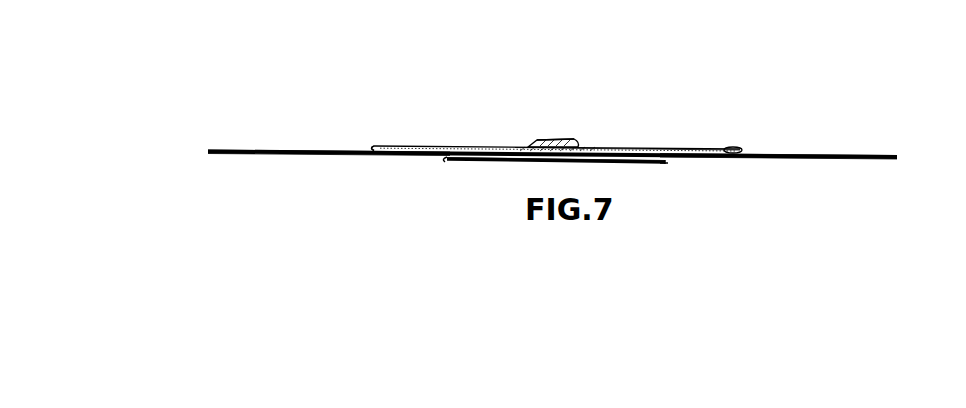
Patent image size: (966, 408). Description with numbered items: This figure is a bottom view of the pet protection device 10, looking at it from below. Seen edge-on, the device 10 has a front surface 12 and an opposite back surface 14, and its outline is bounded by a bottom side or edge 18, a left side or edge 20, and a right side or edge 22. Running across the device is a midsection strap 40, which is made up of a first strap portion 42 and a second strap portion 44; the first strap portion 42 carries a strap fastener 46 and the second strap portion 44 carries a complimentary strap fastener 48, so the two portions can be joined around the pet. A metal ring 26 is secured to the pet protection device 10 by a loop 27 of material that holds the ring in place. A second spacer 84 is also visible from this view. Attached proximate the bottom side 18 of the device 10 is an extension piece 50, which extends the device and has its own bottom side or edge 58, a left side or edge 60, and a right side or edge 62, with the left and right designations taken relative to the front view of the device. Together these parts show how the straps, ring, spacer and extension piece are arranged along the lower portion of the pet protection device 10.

The pet protection device 10 is at (226, 63).
The front surface 12 is at (442, 128).
The back surface 14 is at (430, 170).
The bottom side or edge 18 is at (616, 148).
The left side or edge 20 is at (368, 146).
The right side or edge 22 is at (747, 144).
The metal ring 26 is at (534, 140).
The loop 27 is at (554, 144).
The midsection strap 40 is at (271, 171).
The first strap portion 42 is at (858, 163).
The second strap portion 44 is at (249, 151).
The strap fastener 46 is at (834, 155).
The complimentary strap fastener 48 is at (318, 162).
The extension piece 50 is at (674, 175).
The bottom side or edge 58 is at (661, 150).
The left side or edge 60 is at (442, 160).
The right side or edge 62 is at (672, 163).
The second spacer 84 is at (485, 167).